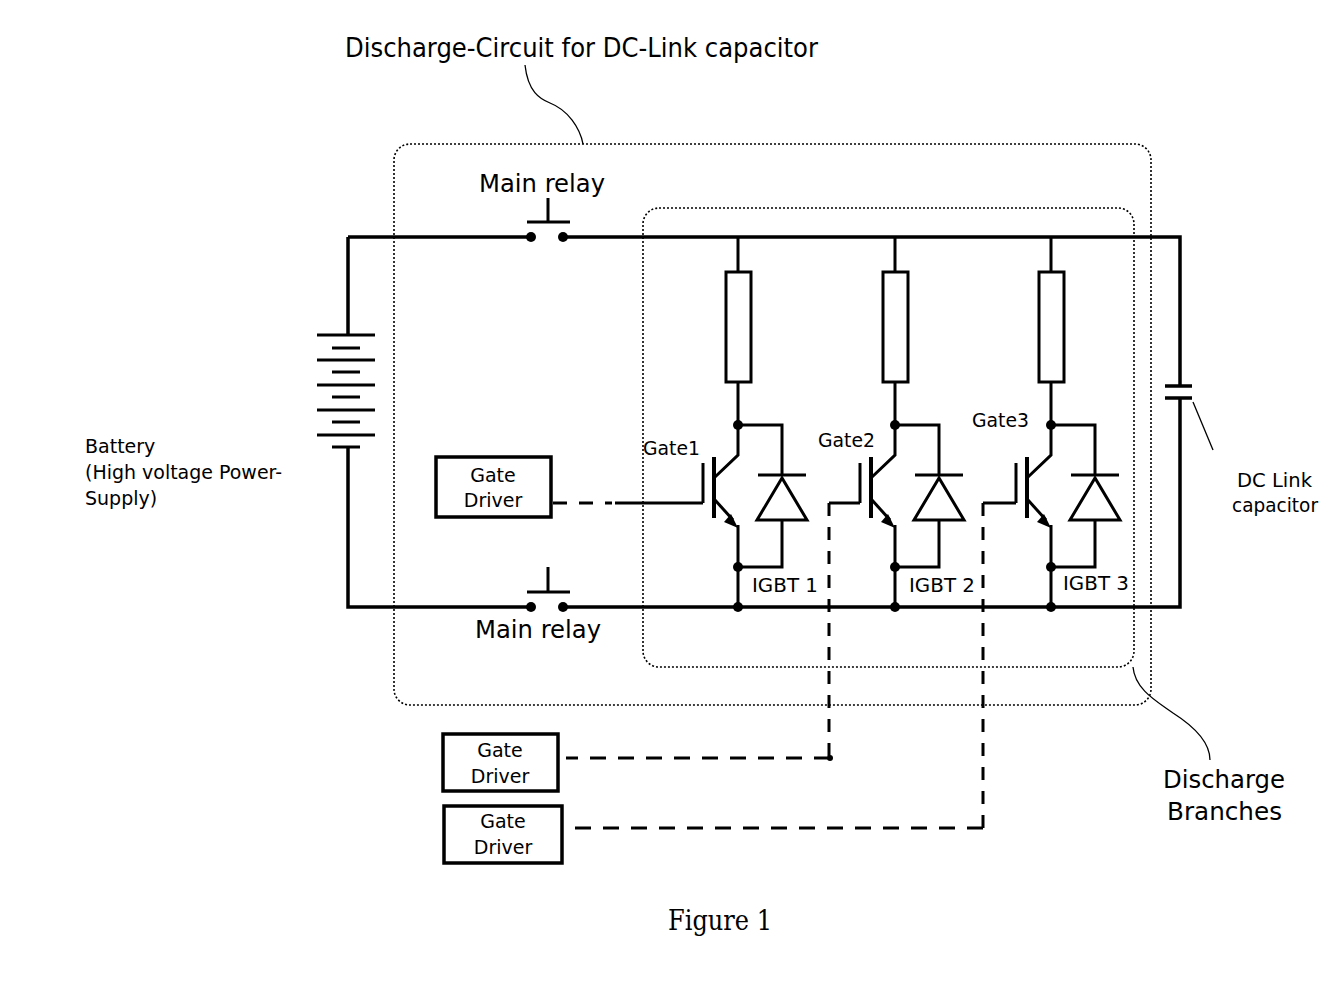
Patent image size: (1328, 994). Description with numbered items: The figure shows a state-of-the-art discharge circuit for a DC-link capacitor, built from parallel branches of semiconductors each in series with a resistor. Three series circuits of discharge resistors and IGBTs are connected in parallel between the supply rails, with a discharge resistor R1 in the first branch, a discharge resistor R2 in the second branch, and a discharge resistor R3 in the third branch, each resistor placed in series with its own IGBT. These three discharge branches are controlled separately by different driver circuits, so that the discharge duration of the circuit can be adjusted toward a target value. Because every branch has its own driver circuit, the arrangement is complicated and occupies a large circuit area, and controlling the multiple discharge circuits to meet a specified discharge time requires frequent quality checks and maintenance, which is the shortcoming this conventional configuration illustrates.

The discharge resistor of first branch R1 is at (758, 327).
The discharge resistor of second branch R2 is at (915, 327).
The discharge resistor of third branch R3 is at (1069, 327).